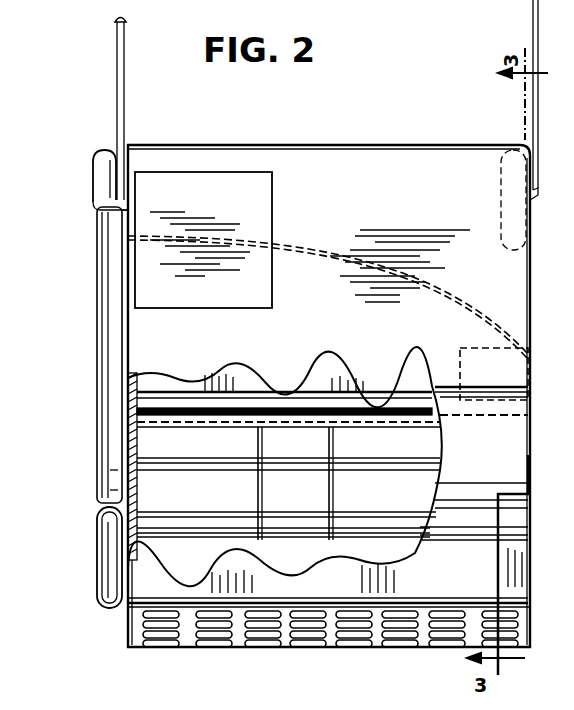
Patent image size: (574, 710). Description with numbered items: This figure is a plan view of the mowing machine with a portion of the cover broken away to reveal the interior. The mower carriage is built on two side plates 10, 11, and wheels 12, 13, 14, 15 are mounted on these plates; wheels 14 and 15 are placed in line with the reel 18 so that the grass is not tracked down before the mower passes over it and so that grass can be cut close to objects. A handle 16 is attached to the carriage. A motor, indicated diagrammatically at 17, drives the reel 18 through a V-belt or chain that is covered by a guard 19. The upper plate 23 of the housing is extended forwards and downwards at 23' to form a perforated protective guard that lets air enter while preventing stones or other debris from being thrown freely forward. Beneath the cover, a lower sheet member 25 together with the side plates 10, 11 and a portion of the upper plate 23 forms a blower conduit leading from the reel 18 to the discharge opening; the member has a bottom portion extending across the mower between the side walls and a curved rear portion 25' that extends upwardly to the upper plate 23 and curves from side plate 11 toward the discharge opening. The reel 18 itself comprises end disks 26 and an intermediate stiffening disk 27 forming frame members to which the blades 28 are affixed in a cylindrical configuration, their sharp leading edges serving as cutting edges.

The side plate 10 is at (128, 386).
The side plate 11 is at (532, 457).
The wheel 12 is at (108, 552).
The wheel 13 is at (108, 190).
The wheel 14 is at (461, 362).
The wheel 15 is at (518, 228).
The handle 16 is at (117, 92).
The motor 17 is at (214, 211).
The reel 18 is at (187, 445).
The guard 19 is at (108, 337).
The upper plate 23 is at (474, 463).
The protective guard 23' is at (294, 628).
The lower sheet member 25 is at (325, 466).
The curved rear portion 25' is at (328, 278).
The end disk 26 is at (140, 500).
The intermediate stiffening disk 27 is at (337, 499).
The blade 28 is at (262, 532).